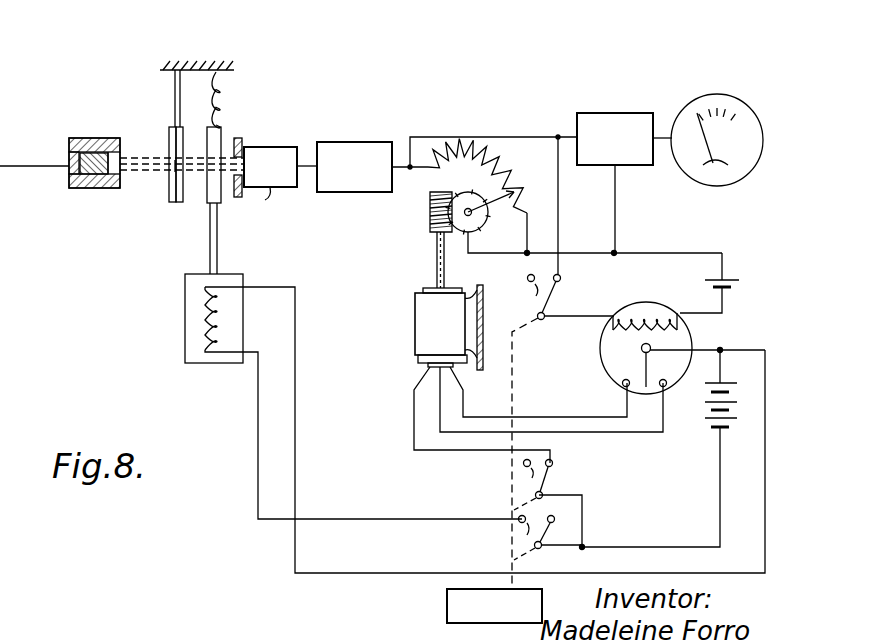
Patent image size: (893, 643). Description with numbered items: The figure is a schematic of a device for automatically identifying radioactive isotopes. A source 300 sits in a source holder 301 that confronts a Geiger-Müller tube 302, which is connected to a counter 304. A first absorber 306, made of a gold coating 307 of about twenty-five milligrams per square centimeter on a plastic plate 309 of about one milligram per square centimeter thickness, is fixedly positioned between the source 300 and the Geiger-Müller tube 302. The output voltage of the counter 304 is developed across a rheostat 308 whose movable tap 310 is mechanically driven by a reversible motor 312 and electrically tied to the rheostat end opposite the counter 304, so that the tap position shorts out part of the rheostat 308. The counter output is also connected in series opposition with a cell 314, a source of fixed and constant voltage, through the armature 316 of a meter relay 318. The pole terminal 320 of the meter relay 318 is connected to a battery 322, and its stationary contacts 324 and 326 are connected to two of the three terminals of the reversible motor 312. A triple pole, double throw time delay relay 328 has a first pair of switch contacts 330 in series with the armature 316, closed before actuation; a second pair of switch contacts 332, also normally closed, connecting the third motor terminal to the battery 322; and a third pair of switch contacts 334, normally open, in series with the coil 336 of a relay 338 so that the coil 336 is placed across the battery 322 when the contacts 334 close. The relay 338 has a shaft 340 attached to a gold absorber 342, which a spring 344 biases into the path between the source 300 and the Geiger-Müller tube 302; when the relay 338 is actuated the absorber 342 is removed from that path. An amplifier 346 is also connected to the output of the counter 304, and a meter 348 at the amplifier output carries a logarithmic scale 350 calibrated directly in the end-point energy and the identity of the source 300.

The source 300 is at (80, 166).
The source holder 301 is at (88, 138).
The Geiger-Müller tube 302 is at (288, 181).
The counter 304 is at (338, 142).
The first absorber 306 is at (170, 184).
The gold coating 307 is at (170, 135).
The rheostat 308 is at (488, 152).
The plastic plate 309 is at (181, 190).
The movable tap 310 is at (496, 218).
The reversible motor 312 is at (449, 301).
The cell 314 is at (728, 275).
The armature 316 is at (642, 316).
The meter relay 318 is at (593, 355).
The pole terminal 320 is at (655, 348).
The battery 322 is at (702, 425).
The stationary contact 324 is at (623, 387).
The stationary contact 326 is at (666, 387).
The time delay relay 328 is at (447, 598).
The first pair of switch contacts 330 is at (556, 361).
The second pair of switch contacts 332 is at (515, 473).
The third pair of switch contacts 334 is at (518, 530).
The coil 336 is at (203, 320).
The relay 338 is at (199, 357).
The shaft 340 is at (218, 247).
The gold absorber 342 is at (216, 142).
The spring 344 is at (224, 95).
The amplifier 346 is at (600, 113).
The meter 348 is at (728, 92).
The logarithmic scale 350 is at (735, 115).